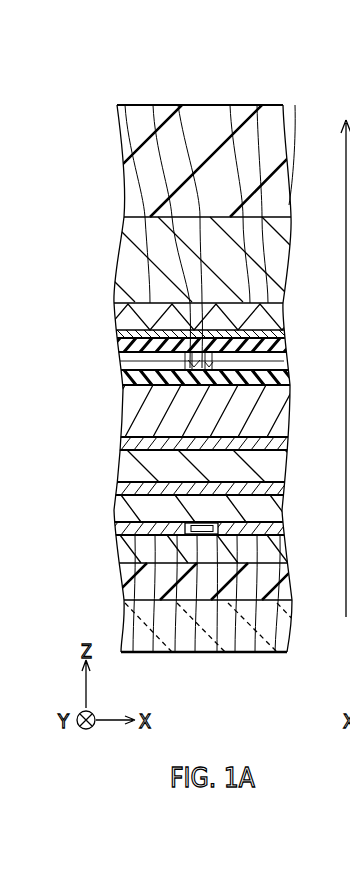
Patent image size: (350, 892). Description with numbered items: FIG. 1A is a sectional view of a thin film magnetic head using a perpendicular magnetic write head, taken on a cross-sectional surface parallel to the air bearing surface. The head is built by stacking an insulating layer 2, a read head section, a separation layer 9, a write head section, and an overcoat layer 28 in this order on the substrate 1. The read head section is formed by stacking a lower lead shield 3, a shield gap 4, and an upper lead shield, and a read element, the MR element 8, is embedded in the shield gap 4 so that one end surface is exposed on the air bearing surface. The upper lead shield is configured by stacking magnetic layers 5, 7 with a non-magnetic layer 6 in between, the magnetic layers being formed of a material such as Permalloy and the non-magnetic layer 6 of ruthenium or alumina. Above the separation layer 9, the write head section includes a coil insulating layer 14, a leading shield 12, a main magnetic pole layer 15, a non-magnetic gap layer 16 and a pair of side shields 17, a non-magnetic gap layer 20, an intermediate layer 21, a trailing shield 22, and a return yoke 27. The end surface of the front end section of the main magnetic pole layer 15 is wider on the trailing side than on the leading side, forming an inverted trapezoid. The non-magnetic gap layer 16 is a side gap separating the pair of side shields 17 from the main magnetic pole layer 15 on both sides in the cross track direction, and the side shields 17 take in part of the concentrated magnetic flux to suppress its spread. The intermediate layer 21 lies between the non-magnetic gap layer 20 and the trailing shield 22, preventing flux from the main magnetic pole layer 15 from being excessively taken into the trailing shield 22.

The substrate 1 is at (275, 652).
The insulating layer 2 is at (255, 652).
The lower lead shield 3 is at (235, 652).
The shield gap 4 is at (195, 652).
The magnetic layer 5 is at (175, 652).
The non-magnetic layer 6 is at (153, 652).
The magnetic layer 7 is at (133, 652).
The MR element 8 is at (217, 652).
The separation layer 9 is at (127, 445).
The leading shield 12 is at (132, 413).
The coil insulating layer 14 is at (125, 372).
The main magnetic pole layer 15 is at (229, 105).
The non-magnetic gap layer 16 is at (153, 105).
The side shield 17 is at (126, 349).
The non-magnetic gap layer 20 is at (295, 105).
The intermediate layer 21 is at (125, 105).
The trailing shield 22 is at (122, 333).
The return yoke 27 is at (178, 105).
The overcoat layer 28 is at (203, 117).